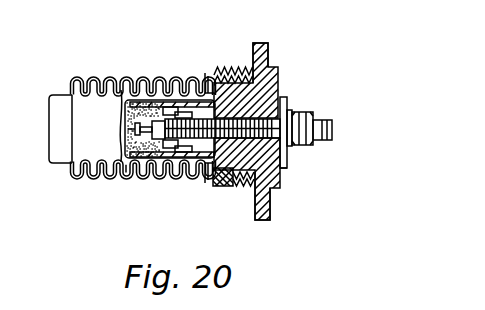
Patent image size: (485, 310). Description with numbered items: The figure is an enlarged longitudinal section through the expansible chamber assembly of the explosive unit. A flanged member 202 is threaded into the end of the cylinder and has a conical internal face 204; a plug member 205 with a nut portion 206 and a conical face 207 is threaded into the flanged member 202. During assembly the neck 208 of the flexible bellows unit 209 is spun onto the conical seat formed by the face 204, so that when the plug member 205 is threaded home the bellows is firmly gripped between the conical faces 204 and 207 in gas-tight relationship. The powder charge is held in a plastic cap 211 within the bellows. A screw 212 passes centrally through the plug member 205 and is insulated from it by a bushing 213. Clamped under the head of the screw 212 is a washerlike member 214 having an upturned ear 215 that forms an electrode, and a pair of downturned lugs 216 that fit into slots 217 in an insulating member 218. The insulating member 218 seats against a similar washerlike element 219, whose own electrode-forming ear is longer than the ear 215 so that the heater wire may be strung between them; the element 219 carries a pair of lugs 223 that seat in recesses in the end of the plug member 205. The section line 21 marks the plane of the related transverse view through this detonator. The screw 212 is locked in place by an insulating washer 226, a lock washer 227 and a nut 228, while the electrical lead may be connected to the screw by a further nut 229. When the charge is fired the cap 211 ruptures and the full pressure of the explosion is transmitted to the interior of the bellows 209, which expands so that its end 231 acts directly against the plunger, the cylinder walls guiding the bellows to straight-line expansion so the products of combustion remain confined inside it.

The section line 21 is at (123, 88).
The flanged member 202 is at (258, 43).
The conical internal face 204 is at (245, 67).
The plug member 205 is at (277, 183).
The nut portion 206 is at (262, 220).
The conical face 207 is at (232, 188).
The neck 208 is at (216, 170).
The flexible bellows unit 209 is at (77, 180).
The plastic cap 211 is at (118, 90).
The screw 212 is at (332, 127).
The bushing 213 is at (280, 86).
The washerlike member 214 is at (150, 102).
The upturned ear 215 is at (133, 178).
The downturned lugs 216 is at (157, 150).
The slots 217 is at (168, 152).
The insulating member 218 is at (172, 107).
The washerlike element 219 is at (182, 110).
The lugs 223 is at (182, 150).
The insulating washer 226 is at (285, 163).
The lock washer 227 is at (290, 110).
The nut 228 is at (297, 146).
The nut 229 is at (300, 146).
The end 231 is at (58, 97).